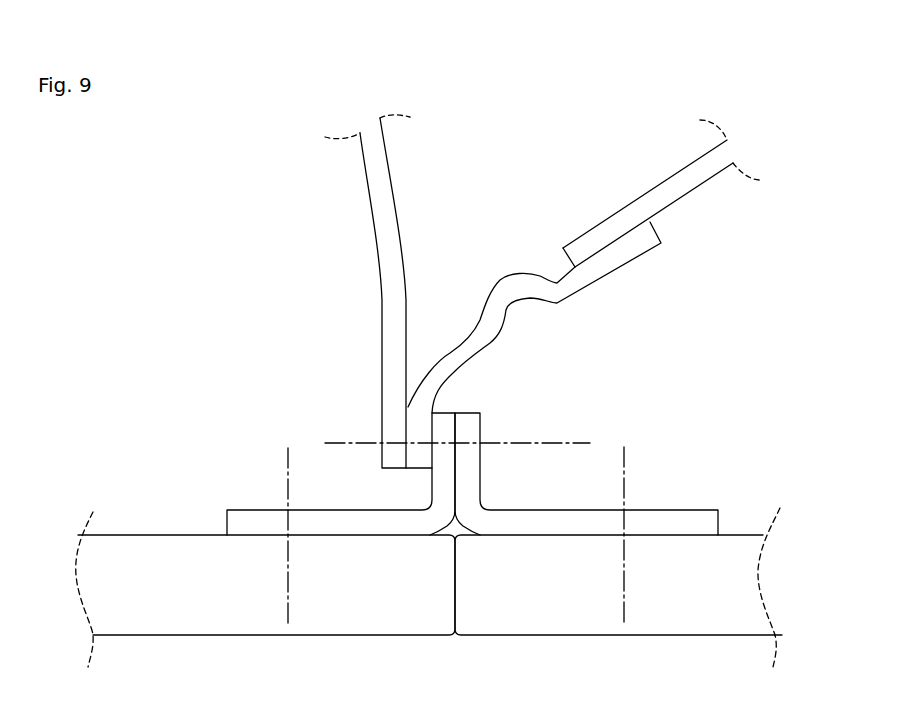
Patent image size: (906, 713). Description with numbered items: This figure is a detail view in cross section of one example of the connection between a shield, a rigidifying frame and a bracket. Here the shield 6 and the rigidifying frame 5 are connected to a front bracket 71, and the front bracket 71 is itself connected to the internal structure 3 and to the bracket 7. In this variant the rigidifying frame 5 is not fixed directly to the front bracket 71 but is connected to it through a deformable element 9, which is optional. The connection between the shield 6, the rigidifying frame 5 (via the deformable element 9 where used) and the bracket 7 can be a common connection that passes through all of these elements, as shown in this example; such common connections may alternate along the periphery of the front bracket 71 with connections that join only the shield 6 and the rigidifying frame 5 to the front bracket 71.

The internal structure 3 is at (192, 583).
The rigidifying frame 5 is at (687, 182).
The shield 6 is at (388, 210).
The bracket 7 is at (676, 523).
The front bracket 71 is at (252, 520).
The deformable element 9 is at (492, 338).